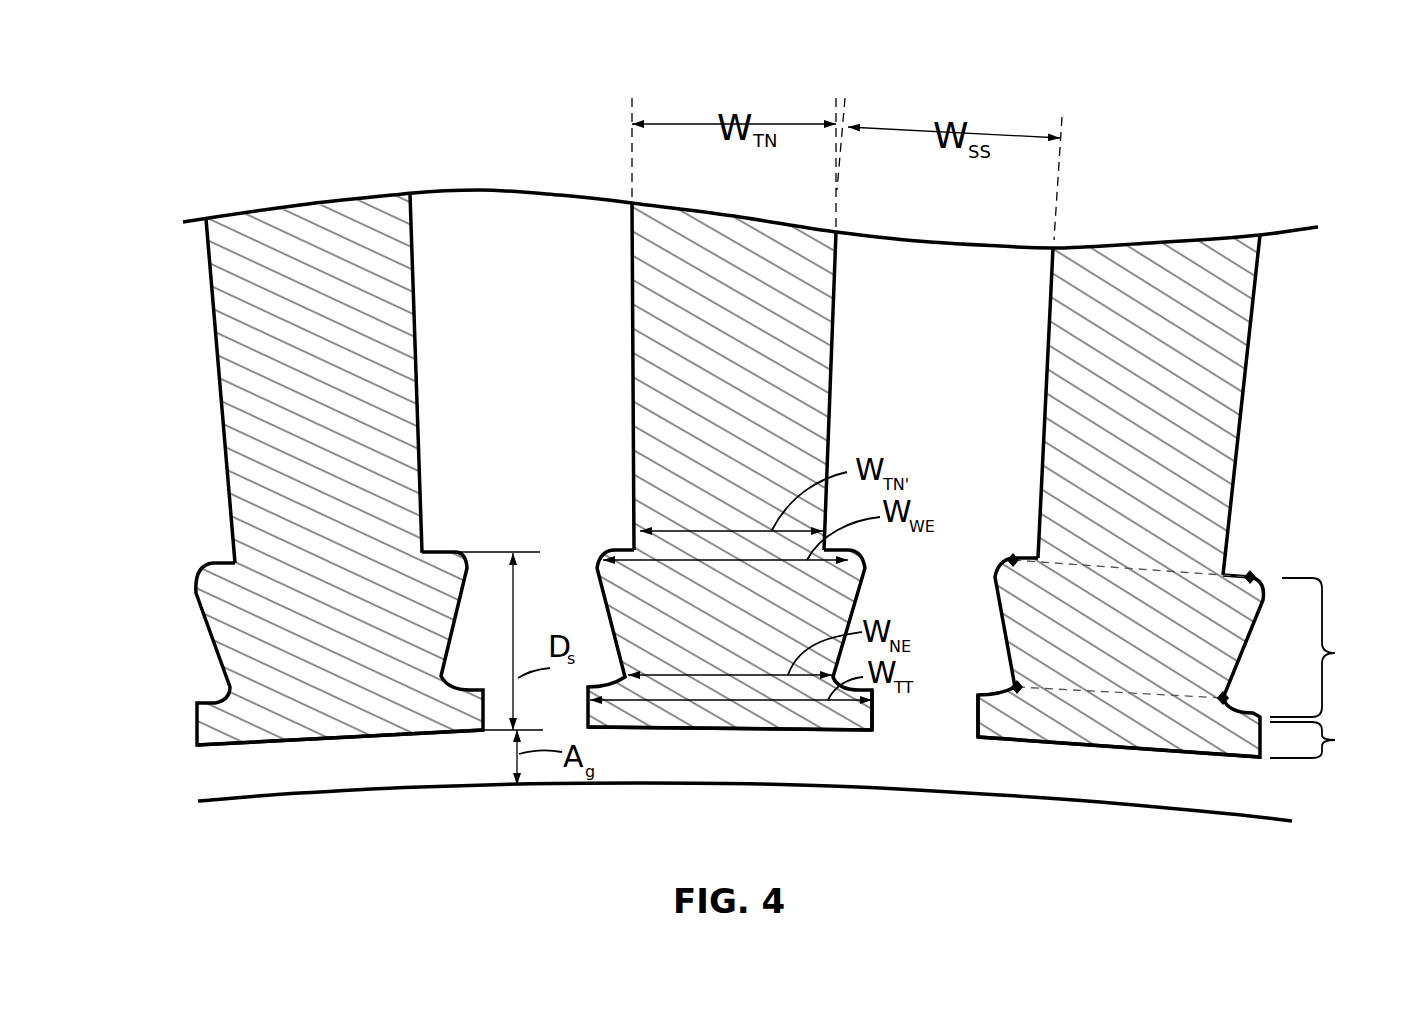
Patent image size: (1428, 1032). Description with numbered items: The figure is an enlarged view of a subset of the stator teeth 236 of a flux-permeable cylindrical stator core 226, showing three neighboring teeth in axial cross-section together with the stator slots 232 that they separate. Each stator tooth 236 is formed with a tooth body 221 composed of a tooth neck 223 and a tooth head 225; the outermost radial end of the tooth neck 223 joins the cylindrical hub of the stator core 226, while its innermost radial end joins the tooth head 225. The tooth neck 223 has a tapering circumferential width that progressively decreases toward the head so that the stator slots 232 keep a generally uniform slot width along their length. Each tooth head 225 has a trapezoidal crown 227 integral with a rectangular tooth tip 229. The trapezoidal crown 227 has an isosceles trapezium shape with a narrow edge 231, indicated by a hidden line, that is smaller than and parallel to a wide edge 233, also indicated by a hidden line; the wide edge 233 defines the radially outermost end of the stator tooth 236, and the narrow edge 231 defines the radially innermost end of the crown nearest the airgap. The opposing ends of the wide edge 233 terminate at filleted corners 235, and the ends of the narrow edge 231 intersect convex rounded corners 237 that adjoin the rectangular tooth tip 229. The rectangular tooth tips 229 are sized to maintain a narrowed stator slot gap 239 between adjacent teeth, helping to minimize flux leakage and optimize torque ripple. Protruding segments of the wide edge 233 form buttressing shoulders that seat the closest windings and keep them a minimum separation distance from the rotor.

The stator core 226 is at (243, 75).
The tooth body 221 is at (735, 475).
The tooth neck 223 is at (225, 428).
The tooth head 225 is at (197, 626).
The stator slot 232 is at (440, 202).
The wide edge 233 is at (1098, 567).
The narrow edge 231 is at (1090, 690).
The filleted corners 235 is at (997, 572).
The convex rounded corners 237 is at (1010, 688).
The trapezoidal crown 227 is at (1336, 653).
The rectangular tooth tip 229 is at (1336, 740).
The stator tooth 236 is at (345, 755).
The stator slot gap 239 is at (917, 747).